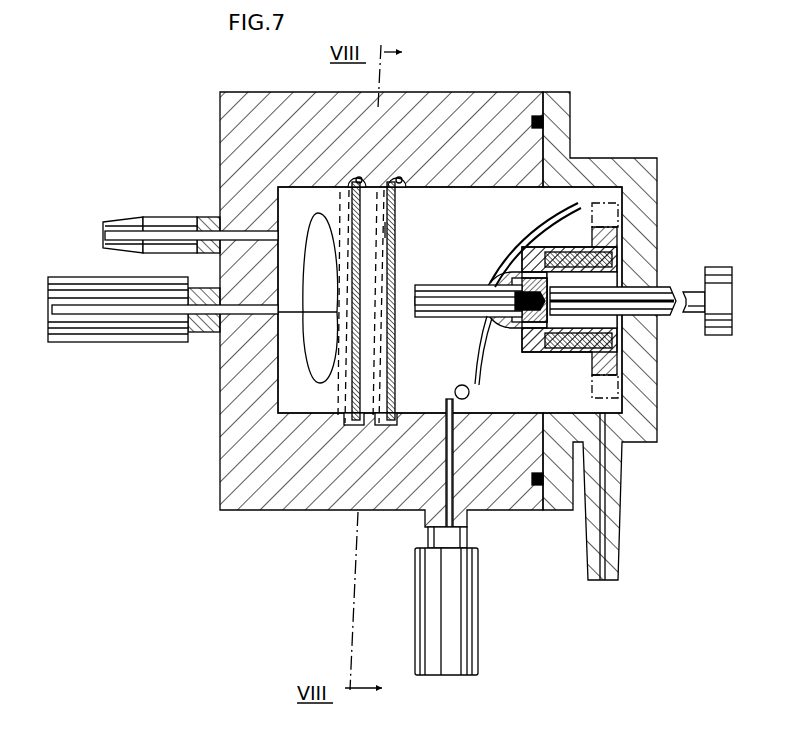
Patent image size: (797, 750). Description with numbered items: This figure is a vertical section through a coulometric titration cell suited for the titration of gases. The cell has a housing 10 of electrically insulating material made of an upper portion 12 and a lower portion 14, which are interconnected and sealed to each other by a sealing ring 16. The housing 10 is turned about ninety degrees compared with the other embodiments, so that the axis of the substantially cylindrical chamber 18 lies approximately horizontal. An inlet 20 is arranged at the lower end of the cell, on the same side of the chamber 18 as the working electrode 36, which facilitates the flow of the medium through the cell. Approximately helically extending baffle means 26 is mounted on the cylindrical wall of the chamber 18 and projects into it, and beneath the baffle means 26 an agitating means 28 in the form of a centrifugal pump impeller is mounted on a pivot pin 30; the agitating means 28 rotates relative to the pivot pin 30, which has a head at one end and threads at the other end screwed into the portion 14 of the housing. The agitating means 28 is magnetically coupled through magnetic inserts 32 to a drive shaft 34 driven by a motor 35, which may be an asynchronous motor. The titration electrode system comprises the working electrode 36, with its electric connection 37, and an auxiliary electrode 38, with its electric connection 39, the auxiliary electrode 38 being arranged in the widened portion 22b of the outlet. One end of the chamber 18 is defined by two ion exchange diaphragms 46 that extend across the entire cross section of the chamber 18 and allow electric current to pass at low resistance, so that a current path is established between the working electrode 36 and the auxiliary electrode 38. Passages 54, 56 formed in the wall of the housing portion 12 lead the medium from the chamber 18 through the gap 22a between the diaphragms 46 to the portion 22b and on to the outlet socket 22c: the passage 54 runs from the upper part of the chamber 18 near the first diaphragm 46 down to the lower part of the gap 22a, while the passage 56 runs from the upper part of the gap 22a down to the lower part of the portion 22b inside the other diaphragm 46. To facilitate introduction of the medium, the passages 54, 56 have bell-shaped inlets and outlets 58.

The housing 10 is at (455, 317).
The upper portion of the housing 12 is at (471, 93).
The lower portion of the housing 14 is at (645, 183).
The sealing ring 16 is at (537, 116).
The chamber 18 is at (578, 196).
The inlet 20 is at (622, 545).
The first portion of the outlet 22a is at (372, 230).
The widened portion of the outlet 22b is at (334, 208).
The outlet socket 22c is at (150, 220).
The baffle means 26 is at (540, 243).
The agitating means 28 is at (523, 350).
The pivot pin 30 is at (440, 298).
The magnetic inserts 32 is at (562, 350).
The drive shaft 34 is at (664, 316).
The motor 35 is at (719, 334).
The working electrode 36 is at (470, 394).
The electric connection of the working electrode 37 is at (481, 571).
The auxiliary electrode 38 is at (322, 312).
The electric connection of the auxiliary electrode 39 is at (133, 342).
The ion exchange diaphragms 46 is at (360, 392).
The passage 54 is at (400, 370).
The passage 56 is at (342, 392).
The bell-shaped inlets and outlets 58 is at (400, 186).